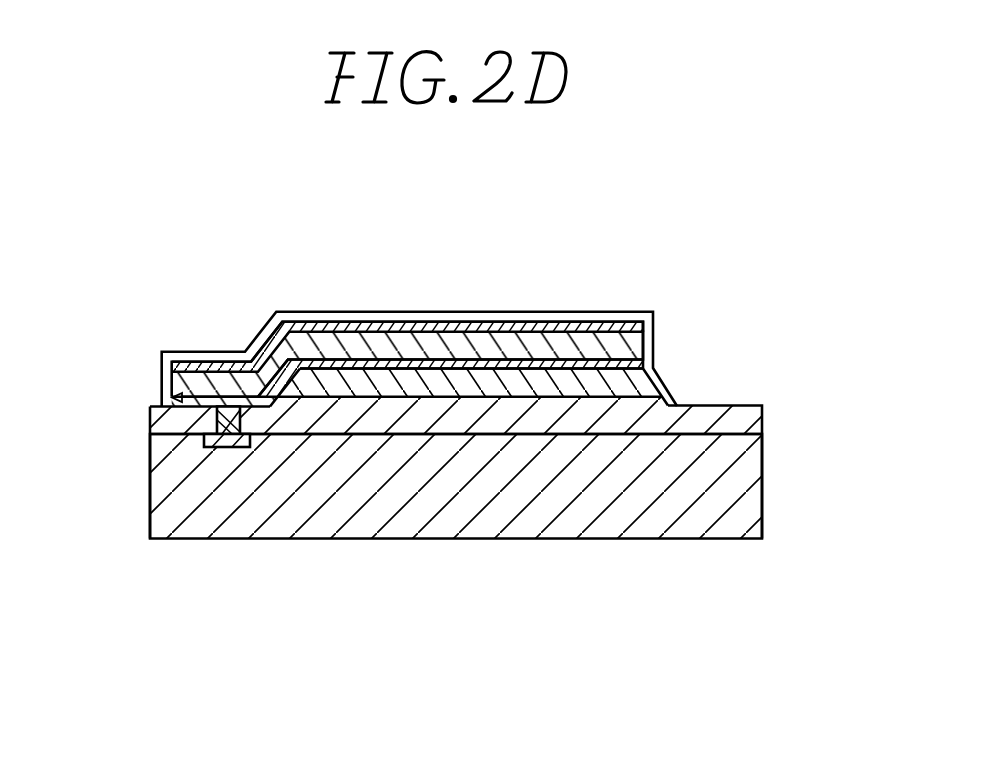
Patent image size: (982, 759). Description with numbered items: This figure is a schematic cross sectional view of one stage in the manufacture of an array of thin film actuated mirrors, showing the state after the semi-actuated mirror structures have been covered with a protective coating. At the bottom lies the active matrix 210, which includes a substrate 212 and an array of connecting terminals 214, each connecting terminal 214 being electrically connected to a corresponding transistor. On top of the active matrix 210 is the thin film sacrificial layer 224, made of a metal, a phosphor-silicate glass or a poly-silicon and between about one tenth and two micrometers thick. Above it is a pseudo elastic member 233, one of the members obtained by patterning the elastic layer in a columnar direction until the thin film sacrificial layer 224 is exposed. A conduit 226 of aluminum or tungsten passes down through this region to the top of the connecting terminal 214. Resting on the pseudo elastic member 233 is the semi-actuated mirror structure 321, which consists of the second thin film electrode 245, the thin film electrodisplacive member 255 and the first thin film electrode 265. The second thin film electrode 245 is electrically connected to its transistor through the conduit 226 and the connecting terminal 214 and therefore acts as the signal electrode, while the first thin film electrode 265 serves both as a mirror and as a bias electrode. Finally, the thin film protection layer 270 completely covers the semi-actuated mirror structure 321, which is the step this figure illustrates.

The active matrix 210 is at (508, 512).
The substrate 212 is at (399, 541).
The connecting terminal 214 is at (216, 446).
The thin film sacrificial layer 224 is at (550, 407).
The conduit 226 is at (216, 423).
The pseudo elastic member 233 is at (508, 378).
The second thin film electrode 245 is at (331, 364).
The thin film electrodisplacive member 255 is at (425, 345).
The first thin film electrode 265 is at (612, 323).
The thin film protection layer 270 is at (203, 352).
The semi-actuated mirror structure 321 is at (519, 287).